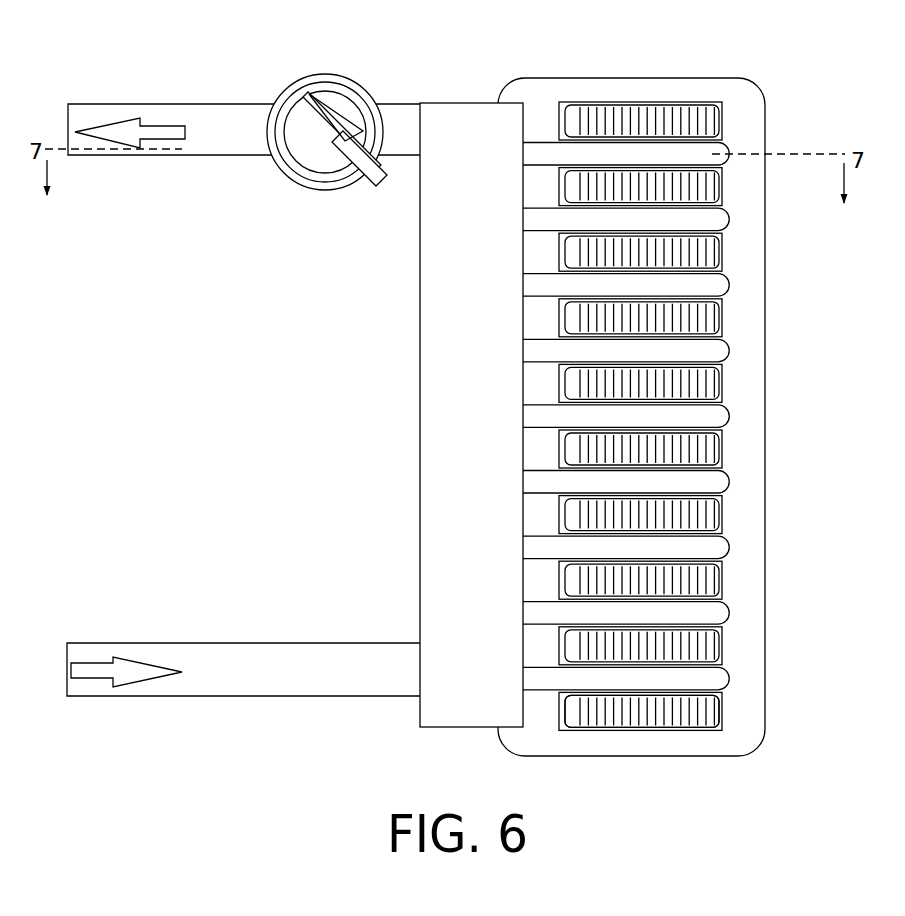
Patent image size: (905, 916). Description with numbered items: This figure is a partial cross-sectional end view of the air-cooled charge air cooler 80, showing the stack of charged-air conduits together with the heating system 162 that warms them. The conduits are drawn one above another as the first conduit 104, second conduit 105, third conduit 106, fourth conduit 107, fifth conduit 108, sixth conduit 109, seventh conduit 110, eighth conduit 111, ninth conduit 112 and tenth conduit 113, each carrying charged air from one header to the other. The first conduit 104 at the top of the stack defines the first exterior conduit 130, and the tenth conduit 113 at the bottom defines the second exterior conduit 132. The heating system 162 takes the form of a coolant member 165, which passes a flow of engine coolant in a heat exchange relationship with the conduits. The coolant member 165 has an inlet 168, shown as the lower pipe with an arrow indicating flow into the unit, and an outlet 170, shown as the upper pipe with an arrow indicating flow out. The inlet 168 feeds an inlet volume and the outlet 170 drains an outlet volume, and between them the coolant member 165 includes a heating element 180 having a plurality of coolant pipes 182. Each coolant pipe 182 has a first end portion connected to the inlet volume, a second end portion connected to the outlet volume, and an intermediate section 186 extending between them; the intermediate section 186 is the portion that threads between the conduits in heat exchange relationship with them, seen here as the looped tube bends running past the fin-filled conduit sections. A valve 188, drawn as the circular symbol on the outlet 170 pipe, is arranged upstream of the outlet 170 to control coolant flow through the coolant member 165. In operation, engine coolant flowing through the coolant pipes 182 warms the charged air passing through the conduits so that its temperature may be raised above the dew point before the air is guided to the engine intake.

The heat exchanger 80 is at (568, 451).
The first conduit 104 is at (710, 122).
The second conduit 105 is at (714, 185).
The third conduit 106 is at (710, 253).
The fourth conduit 107 is at (715, 318).
The fifth conduit 108 is at (715, 385).
The sixth conduit 109 is at (715, 449).
The seventh conduit 110 is at (712, 512).
The eighth conduit 111 is at (715, 579).
The ninth conduit 112 is at (712, 643).
The tenth conduit 113 is at (710, 713).
The first exterior conduit 130 is at (673, 412).
The second exterior conduit 132 is at (640, 732).
The heating system 162 is at (226, 357).
The coolant member 165 is at (418, 352).
The inlet 168 is at (66, 668).
The outlet 170 is at (68, 128).
The heating element 180 is at (532, 97).
The coolant pipes 182 is at (614, 154).
The intermediate section 186 is at (723, 152).
The valve 188 is at (298, 80).